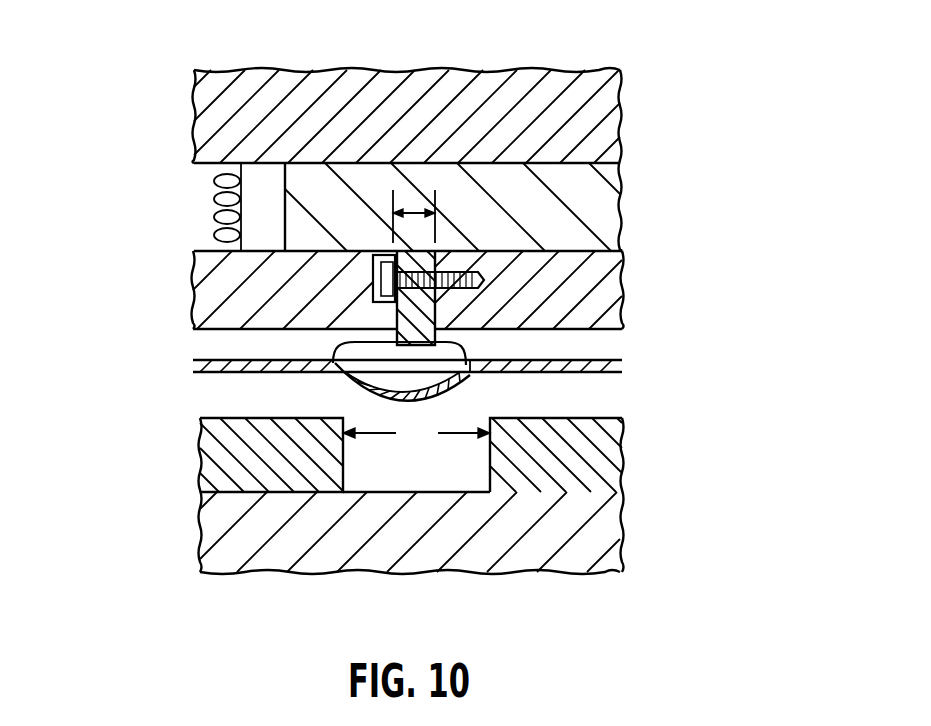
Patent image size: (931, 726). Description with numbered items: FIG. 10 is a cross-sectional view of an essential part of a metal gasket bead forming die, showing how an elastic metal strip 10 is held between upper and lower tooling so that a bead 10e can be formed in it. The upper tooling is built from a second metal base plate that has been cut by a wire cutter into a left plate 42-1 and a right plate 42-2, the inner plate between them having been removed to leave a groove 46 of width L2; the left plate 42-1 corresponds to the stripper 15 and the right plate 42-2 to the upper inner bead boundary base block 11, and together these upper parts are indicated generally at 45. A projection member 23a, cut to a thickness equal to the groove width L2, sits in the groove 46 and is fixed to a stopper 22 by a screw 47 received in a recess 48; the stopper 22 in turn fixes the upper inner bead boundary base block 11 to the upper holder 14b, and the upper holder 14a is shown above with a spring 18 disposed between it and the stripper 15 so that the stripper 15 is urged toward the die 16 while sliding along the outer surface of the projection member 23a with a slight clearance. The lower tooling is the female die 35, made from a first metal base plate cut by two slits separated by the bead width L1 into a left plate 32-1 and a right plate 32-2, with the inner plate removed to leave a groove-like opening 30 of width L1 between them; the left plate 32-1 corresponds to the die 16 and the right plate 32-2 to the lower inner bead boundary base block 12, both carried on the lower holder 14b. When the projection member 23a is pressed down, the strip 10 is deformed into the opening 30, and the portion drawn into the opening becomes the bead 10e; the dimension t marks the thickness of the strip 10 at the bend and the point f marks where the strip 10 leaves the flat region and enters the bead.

The elastic metal strip 10 is at (454, 400).
The bead 10e is at (452, 398).
The upper holder 14a is at (590, 145).
The upper holder 14b is at (607, 542).
The spring 18 is at (214, 206).
The stopper 22 is at (607, 206).
The projection member 23a is at (465, 386).
The groove-like opening 30 is at (451, 487).
The left plate 32-1 is at (189, 495).
The right plate 32-2 is at (630, 495).
The female die 35 is at (640, 434).
The left plate 42-1 is at (208, 290).
The right plate 42-2 is at (618, 290).
The upper clamp assembly 45 is at (640, 264).
The groove 46 is at (455, 306).
The screw 47 is at (497, 257).
The recess 48 is at (373, 290).
The upper inner bead boundary base block 11 is at (610, 300).
The lower inner bead boundary base block 12 is at (612, 458).
The stripper 15 is at (218, 289).
The die 16 is at (216, 458).
The width of bead L1 is at (416, 434).
The groove width L2 is at (410, 206).
The thickness dimension t is at (385, 342).
The fold point f is at (337, 367).